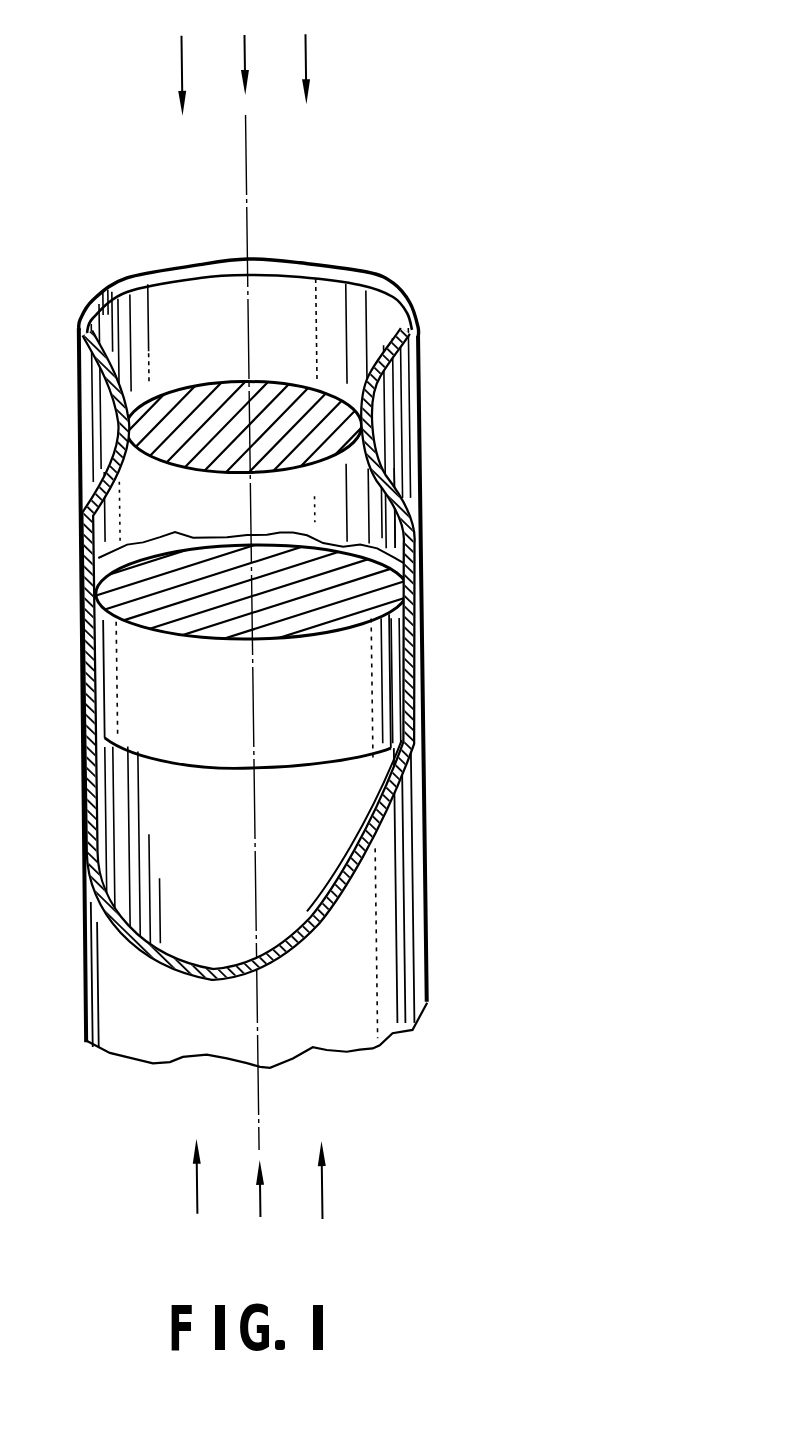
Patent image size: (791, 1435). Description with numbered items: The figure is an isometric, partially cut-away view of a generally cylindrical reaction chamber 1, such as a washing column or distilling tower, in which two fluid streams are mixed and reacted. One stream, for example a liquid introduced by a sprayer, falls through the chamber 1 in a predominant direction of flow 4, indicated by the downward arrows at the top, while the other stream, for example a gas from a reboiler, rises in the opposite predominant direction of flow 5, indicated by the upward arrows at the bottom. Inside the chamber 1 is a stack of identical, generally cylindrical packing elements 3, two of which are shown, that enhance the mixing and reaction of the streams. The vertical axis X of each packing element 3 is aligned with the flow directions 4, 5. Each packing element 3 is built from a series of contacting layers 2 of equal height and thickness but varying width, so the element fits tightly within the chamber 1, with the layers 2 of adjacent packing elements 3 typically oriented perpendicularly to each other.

The reaction chamber 1 is at (509, 296).
The layers 2 is at (200, 393).
The packing elements 3 is at (290, 358).
The predominant direction of flow 4 is at (340, 57).
The opposite predominant direction of flow 5 is at (343, 1189).
The vertical axis X is at (250, 176).